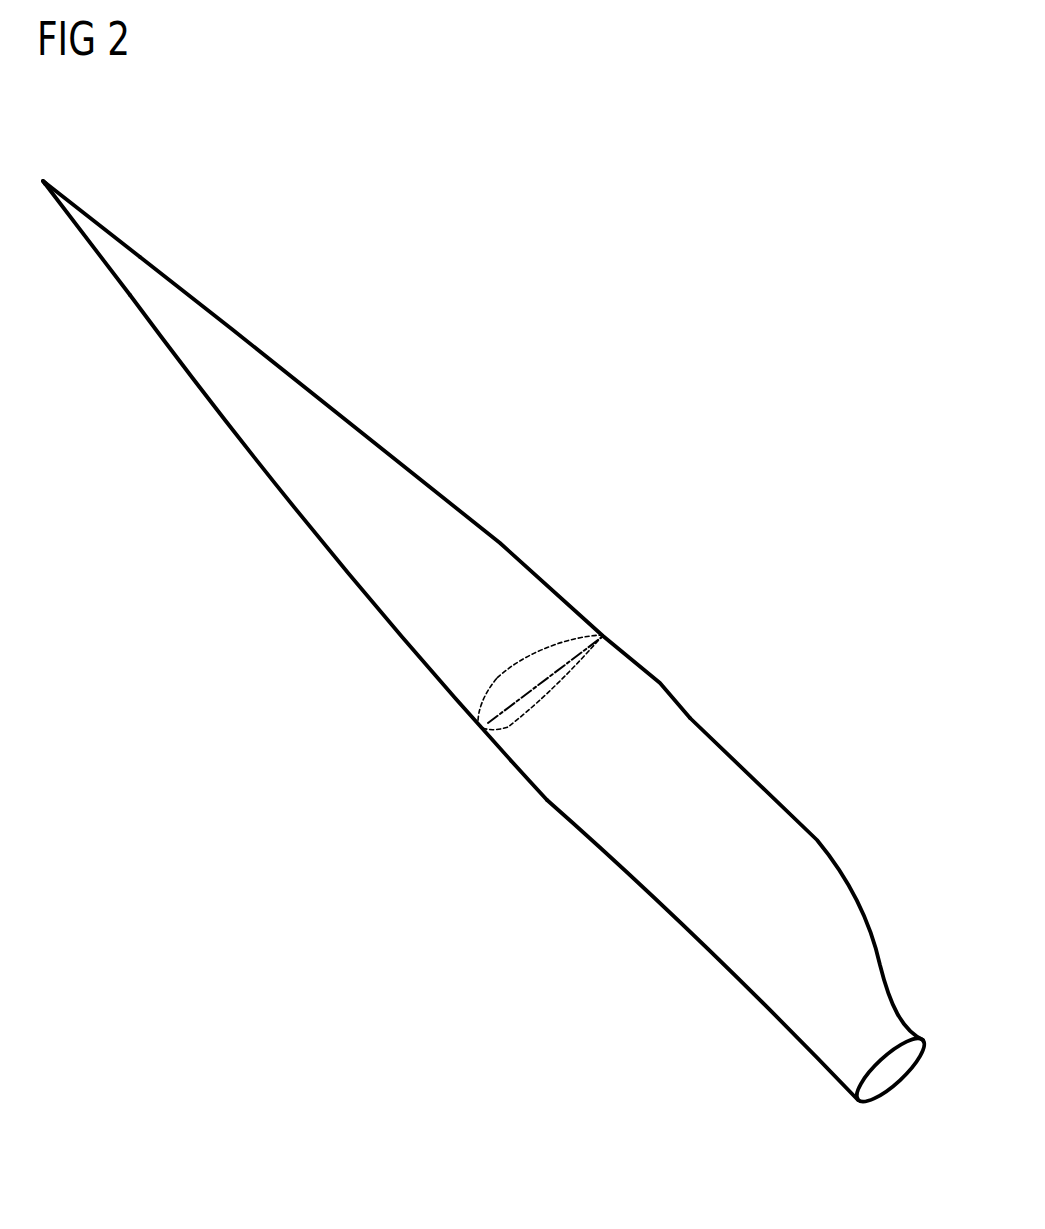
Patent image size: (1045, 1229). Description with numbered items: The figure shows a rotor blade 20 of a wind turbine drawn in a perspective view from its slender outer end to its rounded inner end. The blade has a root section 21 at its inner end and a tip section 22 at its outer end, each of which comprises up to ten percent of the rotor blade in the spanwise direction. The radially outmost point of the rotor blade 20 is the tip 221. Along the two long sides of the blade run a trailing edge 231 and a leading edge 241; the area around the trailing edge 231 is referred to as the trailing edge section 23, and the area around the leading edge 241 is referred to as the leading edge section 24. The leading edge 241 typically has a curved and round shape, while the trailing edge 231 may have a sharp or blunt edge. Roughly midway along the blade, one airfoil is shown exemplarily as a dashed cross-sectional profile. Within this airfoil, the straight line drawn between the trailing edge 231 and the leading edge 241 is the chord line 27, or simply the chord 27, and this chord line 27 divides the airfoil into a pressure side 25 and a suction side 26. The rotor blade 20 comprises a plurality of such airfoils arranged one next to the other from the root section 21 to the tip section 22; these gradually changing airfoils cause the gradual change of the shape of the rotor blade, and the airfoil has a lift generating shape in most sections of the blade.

The rotor blade 20 is at (658, 530).
The root section 21 is at (890, 1027).
The tip section 22 is at (113, 237).
The tip 221 is at (43, 178).
The trailing edge section 23 is at (683, 724).
The trailing edge 231 is at (757, 773).
The leading edge section 24 is at (560, 793).
The leading edge 241 is at (608, 863).
The pressure side 25 is at (565, 678).
The suction side 26 is at (532, 657).
The chord line 27 is at (517, 702).